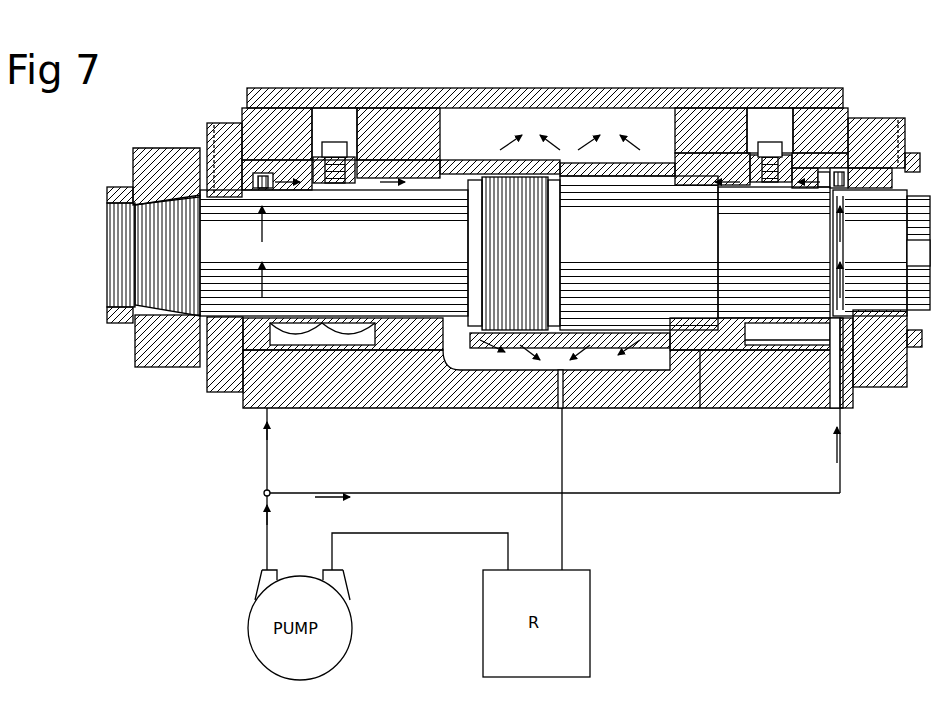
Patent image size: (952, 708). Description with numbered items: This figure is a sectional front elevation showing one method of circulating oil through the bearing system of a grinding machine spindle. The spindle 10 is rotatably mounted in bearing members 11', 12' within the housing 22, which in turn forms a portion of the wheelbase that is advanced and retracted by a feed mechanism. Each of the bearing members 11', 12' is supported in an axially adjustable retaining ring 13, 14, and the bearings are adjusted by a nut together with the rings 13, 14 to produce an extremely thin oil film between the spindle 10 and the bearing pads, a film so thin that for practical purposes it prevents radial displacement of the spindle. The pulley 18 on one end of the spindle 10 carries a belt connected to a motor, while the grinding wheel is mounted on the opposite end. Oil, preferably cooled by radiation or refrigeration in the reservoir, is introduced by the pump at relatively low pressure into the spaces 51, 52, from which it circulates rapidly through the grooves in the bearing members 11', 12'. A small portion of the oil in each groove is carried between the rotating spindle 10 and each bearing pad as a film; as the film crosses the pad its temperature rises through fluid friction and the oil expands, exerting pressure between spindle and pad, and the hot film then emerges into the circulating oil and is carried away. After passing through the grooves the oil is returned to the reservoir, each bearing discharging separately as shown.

The spindle 10 is at (612, 242).
The bearing member 11' is at (787, 387).
The bearing member 12' is at (343, 381).
The retaining ring 13 is at (730, 390).
The retaining ring 14 is at (806, 350).
The pulley 18 is at (140, 340).
The housing 22 is at (630, 398).
The space 51 is at (864, 345).
The space 52 is at (230, 355).